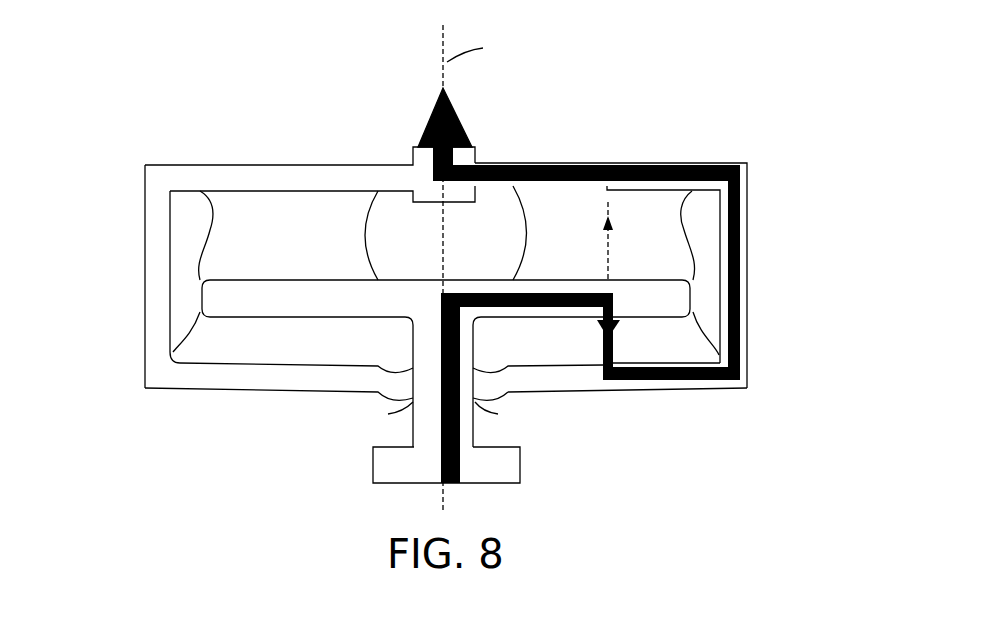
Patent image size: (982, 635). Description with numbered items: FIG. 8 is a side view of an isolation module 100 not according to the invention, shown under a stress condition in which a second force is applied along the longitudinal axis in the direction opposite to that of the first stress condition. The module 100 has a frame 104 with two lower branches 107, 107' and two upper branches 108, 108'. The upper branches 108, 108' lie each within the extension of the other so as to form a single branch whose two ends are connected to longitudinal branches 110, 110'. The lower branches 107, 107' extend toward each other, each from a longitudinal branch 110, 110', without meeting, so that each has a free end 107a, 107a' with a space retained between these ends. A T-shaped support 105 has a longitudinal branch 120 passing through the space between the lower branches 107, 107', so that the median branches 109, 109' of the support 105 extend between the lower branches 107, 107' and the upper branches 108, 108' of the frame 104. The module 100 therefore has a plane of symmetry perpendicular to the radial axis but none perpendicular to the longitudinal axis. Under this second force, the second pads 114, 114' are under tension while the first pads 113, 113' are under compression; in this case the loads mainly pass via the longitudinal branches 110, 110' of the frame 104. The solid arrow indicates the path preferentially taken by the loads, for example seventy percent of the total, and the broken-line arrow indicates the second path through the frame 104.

The isolation module 100 is at (672, 135).
The frame 104 is at (752, 227).
The support 105 is at (416, 270).
The lower branch 107 is at (295, 408).
The lower branch 107' is at (596, 410).
The free end 107a is at (339, 416).
The free end 107a' is at (550, 415).
The upper branch 108 is at (310, 155).
The upper branch 108' is at (586, 243).
The median branch 109 is at (247, 363).
The median branch 109' is at (642, 363).
The longitudinal branch 110 is at (101, 276).
The longitudinal branch 110' is at (653, 250).
The first pad 113 is at (111, 296).
The first pad 113' is at (724, 302).
The second pad 114 is at (173, 232).
The second pad 114' is at (720, 233).
The longitudinal branch 120 is at (414, 423).